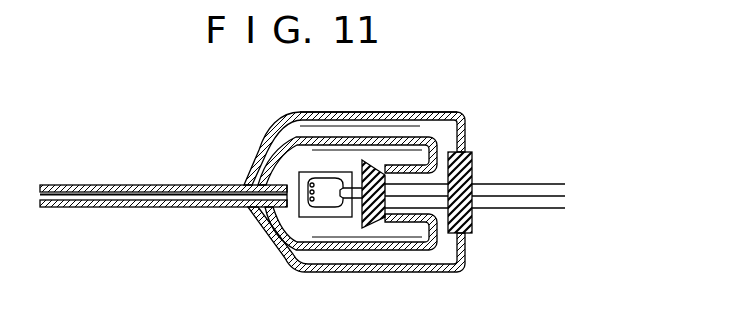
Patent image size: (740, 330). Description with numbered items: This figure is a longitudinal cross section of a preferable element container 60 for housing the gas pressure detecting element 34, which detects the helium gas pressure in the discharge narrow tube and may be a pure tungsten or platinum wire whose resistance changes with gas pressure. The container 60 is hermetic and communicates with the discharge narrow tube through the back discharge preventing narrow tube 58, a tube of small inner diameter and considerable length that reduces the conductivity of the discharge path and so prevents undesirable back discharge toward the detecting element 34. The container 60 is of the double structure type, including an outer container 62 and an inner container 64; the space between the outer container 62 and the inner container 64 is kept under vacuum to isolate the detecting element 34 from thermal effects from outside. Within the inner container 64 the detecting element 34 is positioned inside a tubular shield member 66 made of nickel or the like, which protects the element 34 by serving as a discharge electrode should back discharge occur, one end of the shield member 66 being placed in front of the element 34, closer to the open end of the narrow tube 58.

The gas pressure detecting element 34 is at (326, 207).
The back discharge preventing narrow tube 58 is at (183, 207).
The element container 60 is at (404, 100).
The outer container 62 is at (313, 113).
The inner container 64 is at (377, 250).
The tubular shield member 66 is at (306, 176).